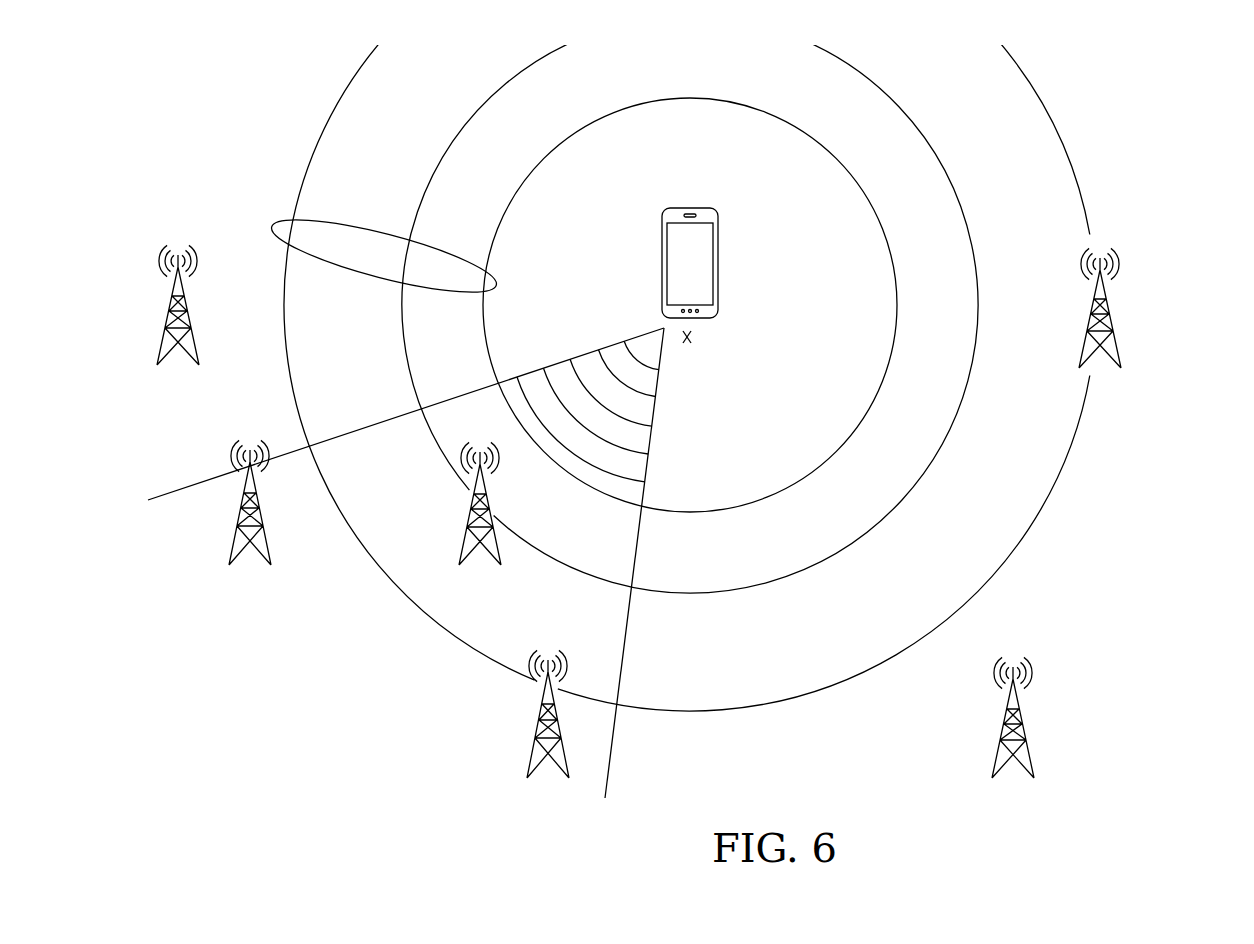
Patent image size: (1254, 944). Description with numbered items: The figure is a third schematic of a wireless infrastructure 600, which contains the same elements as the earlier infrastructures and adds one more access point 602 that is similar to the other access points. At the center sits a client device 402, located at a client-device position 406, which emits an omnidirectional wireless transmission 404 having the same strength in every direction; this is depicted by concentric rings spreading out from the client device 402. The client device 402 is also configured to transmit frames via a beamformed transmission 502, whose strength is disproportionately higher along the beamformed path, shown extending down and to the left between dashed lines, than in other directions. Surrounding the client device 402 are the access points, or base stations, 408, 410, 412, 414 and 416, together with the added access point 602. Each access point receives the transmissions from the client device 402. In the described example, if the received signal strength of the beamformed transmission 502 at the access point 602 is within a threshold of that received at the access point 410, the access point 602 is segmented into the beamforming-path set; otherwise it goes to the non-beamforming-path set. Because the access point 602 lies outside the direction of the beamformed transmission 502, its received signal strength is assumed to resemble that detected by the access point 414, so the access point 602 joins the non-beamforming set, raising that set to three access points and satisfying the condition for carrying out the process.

The wireless infrastructure 600 is at (1252, 59).
The client device 402 is at (711, 276).
The omnidirectional wireless transmission 404 is at (272, 228).
The client-device position 406 is at (690, 346).
The beamformed transmission 502 is at (589, 352).
The access point 408 is at (271, 601).
The access point 410 is at (502, 601).
The access point 412 is at (570, 813).
The access point 414 is at (1036, 815).
The access point 416 is at (1167, 325).
The access point 602 is at (198, 399).